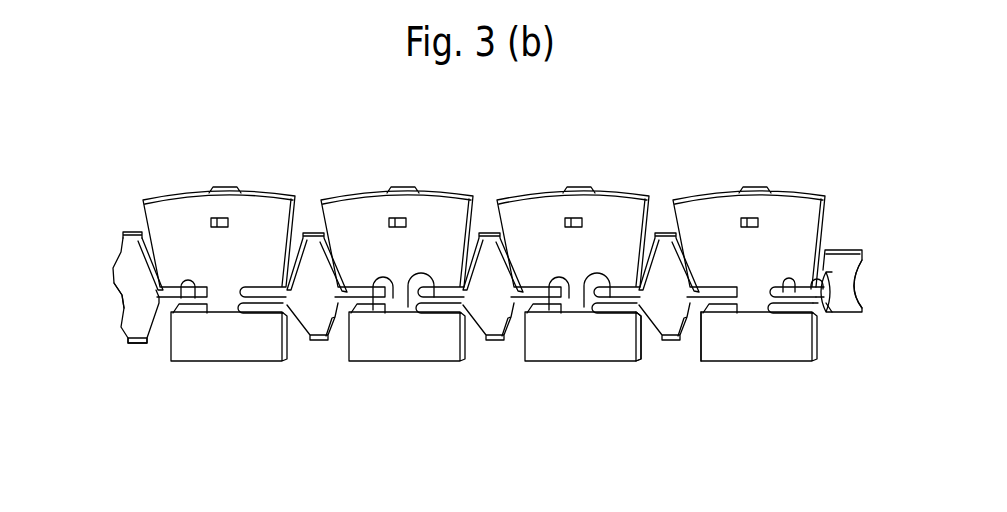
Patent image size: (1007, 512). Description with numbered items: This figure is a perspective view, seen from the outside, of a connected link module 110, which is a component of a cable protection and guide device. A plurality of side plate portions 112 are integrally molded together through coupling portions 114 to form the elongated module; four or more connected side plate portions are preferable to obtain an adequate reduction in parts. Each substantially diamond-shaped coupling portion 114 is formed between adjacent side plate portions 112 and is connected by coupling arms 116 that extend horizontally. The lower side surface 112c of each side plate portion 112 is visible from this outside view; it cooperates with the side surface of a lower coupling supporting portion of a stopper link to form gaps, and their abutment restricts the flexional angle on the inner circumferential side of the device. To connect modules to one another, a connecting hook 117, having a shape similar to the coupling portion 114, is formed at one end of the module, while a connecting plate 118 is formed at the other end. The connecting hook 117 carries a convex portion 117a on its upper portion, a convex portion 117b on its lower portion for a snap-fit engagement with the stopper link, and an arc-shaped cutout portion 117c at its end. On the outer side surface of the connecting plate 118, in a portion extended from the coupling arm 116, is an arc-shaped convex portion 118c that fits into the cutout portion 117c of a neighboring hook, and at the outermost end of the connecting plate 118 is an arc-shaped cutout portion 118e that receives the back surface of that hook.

The connected link module 110 is at (779, 371).
The side plate portion 112 is at (217, 348).
The lower side surface 112c is at (644, 336).
The coupling portion 114 is at (308, 313).
The coupling arm 116 is at (190, 300).
The connecting hook 117 is at (133, 315).
The convex portion 117a is at (123, 231).
The convex portion 117b is at (135, 344).
The arc-shaped cutout portion 117c is at (118, 296).
The connecting plate 118 is at (845, 259).
The arc-shaped convex portion 118c is at (829, 282).
The arc-shaped cutout portion 118e is at (858, 285).